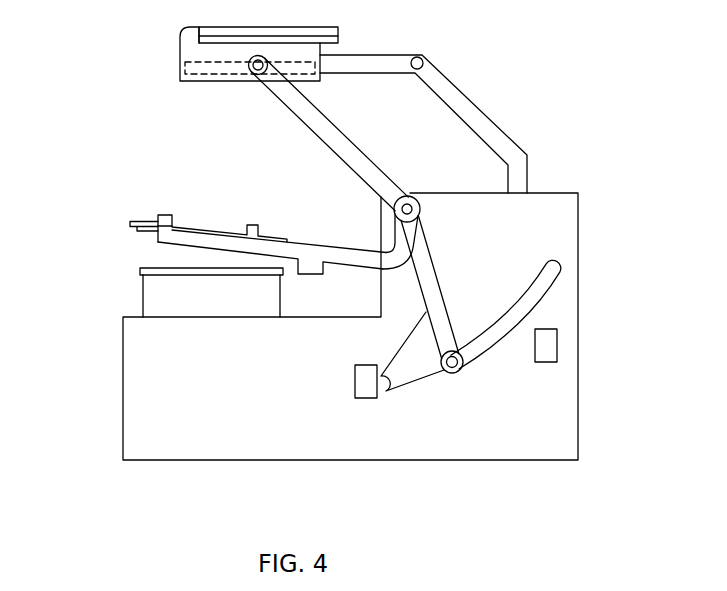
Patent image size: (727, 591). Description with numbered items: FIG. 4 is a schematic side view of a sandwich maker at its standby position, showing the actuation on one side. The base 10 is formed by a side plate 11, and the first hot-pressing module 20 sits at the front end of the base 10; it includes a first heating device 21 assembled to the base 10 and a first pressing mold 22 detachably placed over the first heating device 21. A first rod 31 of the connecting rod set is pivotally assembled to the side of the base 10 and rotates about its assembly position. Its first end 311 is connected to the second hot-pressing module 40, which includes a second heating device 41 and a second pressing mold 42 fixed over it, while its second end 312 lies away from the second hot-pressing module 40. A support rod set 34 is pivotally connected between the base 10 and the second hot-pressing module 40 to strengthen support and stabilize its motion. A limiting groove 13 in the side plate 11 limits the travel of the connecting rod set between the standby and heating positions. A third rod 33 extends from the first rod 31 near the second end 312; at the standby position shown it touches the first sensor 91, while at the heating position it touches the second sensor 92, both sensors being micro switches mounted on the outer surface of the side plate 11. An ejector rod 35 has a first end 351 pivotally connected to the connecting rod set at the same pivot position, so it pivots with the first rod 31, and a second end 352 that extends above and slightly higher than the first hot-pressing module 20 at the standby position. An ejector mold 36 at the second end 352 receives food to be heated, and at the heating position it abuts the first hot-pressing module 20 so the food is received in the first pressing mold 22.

The base 10 is at (402, 326).
The side plate 11 is at (566, 220).
The limiting groove 13 is at (553, 275).
The first hot-pressing module 20 is at (62, 257).
The first heating device 21 is at (143, 300).
The first pressing mold 22 is at (140, 268).
The first rod 31 is at (300, 136).
The first end 311 is at (270, 88).
The second end 312 is at (447, 340).
The third rod 33 is at (397, 373).
The support rod set 34 is at (520, 174).
The ejector rod 35 is at (251, 225).
The first end 351 is at (388, 256).
The second end 352 is at (165, 237).
The ejector mold 36 is at (130, 221).
The second hot-pressing module 40 is at (118, 27).
The second heating device 41 is at (188, 40).
The second pressing mold 42 is at (188, 70).
The first sensor 91 is at (365, 393).
The second sensor 92 is at (548, 347).